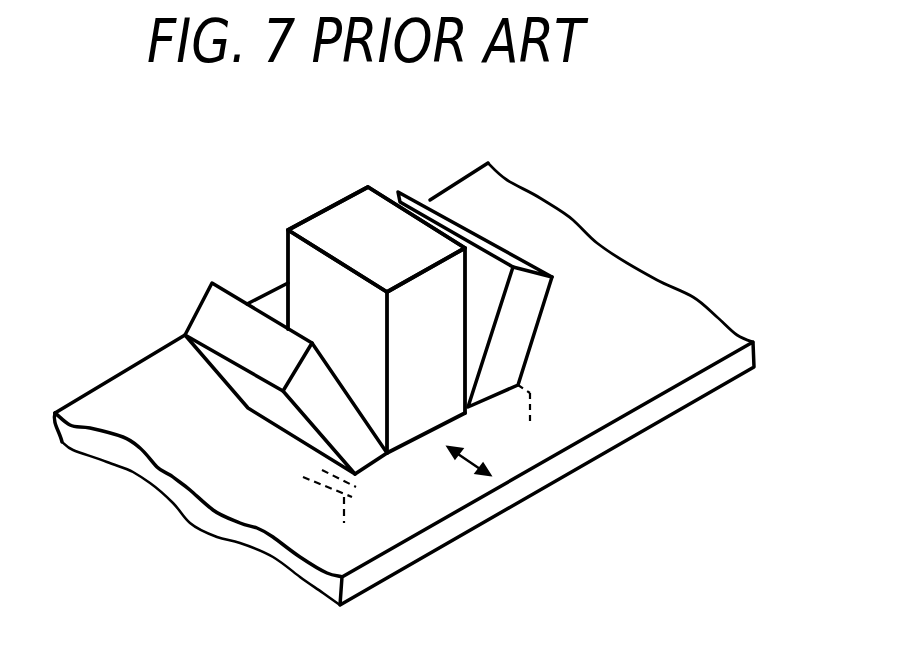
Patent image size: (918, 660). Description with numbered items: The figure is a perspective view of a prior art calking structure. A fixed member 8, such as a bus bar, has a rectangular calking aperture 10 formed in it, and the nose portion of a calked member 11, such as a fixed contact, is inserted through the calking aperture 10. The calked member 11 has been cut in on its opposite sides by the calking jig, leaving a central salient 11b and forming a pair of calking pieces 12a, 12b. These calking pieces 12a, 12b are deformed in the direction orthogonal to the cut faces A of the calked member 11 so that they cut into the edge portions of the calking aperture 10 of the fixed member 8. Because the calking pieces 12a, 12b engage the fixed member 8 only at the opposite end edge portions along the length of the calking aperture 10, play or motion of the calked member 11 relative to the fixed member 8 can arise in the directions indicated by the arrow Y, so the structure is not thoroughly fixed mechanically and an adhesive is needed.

The fixed member 8 is at (688, 343).
The calking aperture 10 is at (483, 397).
The calked member 11 is at (322, 188).
The salient 11b is at (370, 227).
The calking piece 12a is at (222, 325).
The calking piece 12b is at (472, 232).
The cut faces A is at (467, 312).
The arrow Y is at (470, 463).